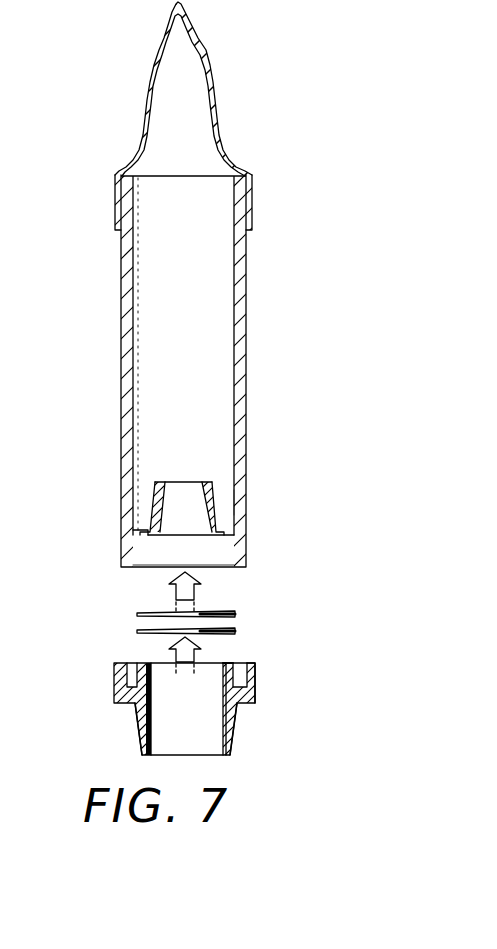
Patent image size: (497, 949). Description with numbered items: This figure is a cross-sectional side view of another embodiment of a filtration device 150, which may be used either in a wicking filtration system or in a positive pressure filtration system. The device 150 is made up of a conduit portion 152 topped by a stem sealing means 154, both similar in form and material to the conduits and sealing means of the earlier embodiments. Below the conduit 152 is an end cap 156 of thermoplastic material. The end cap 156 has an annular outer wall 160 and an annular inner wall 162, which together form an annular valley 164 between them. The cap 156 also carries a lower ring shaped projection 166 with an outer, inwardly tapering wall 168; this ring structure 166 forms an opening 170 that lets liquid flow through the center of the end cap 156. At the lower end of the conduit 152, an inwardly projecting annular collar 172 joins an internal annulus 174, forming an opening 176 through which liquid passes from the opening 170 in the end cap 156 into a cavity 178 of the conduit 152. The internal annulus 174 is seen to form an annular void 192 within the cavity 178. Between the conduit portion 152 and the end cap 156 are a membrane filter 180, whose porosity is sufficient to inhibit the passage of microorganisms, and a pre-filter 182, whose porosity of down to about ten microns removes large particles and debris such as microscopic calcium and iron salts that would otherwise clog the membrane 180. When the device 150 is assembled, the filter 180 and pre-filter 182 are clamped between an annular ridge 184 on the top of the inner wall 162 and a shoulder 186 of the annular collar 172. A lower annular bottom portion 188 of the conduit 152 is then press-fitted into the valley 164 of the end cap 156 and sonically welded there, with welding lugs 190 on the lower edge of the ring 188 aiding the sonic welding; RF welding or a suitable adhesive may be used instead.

The filtration device 150 is at (333, 758).
The conduit portion 152 is at (252, 254).
The stem sealing means 154 is at (233, 79).
The end cap 156 is at (260, 688).
The annular outer wall 160 is at (256, 673).
The annular inner wall 162 is at (142, 665).
The annular valley 164 is at (250, 665).
The lower ring shaped projection 166 is at (234, 736).
The outer, inwardly tapering wall 168 is at (140, 728).
The opening 170 is at (152, 755).
The inwardly projecting annular collar 172 is at (247, 502).
The internal annulus 174 is at (157, 516).
The opening 176 is at (180, 498).
The cavity 178 is at (168, 243).
The membrane filter 180 is at (137, 612).
The pre-filter 182 is at (137, 630).
The annular ridge 184 is at (237, 662).
The shoulder 186 is at (148, 550).
The lower annular bottom portion 188 is at (246, 549).
The welding lugs 190 is at (245, 566).
The annular void 192 is at (236, 485).